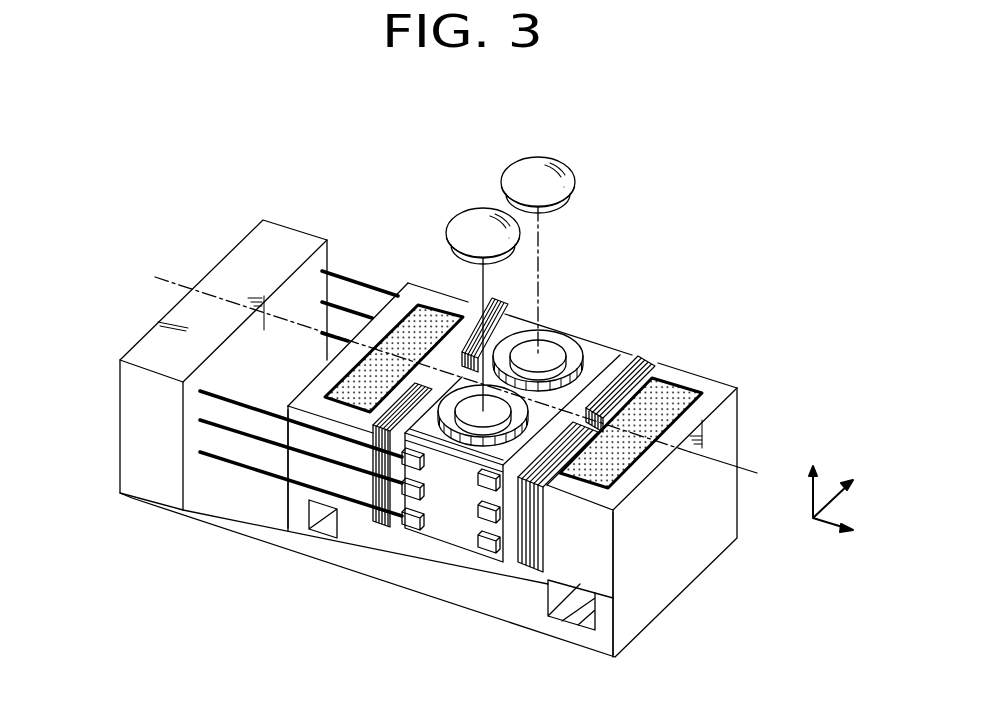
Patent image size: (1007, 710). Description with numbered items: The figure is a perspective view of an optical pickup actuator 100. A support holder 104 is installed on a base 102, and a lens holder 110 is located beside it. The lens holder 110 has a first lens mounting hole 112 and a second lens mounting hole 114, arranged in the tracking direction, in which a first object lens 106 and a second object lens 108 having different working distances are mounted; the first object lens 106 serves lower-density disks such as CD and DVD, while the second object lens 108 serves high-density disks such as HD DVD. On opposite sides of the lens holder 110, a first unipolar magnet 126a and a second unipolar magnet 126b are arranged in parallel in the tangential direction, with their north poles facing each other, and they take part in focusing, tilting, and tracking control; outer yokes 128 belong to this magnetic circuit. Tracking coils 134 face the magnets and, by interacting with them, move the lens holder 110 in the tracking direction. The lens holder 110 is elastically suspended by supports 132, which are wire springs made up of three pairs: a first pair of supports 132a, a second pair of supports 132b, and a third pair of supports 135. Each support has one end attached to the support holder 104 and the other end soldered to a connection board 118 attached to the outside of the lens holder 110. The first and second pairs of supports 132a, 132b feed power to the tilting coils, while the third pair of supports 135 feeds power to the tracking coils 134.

The optical pickup actuator 100 is at (258, 152).
The base 102 is at (253, 533).
The support holder 104 is at (218, 280).
The first object lens 106 is at (469, 217).
The second object lens 108 is at (517, 163).
The lens holder 110 is at (613, 357).
The first lens mounting hole 112 is at (466, 410).
The second lens mounting hole 114 is at (553, 368).
The connection board 118 is at (446, 495).
The first unipolar magnet 126a is at (432, 325).
The second unipolar magnet 126b is at (678, 397).
The outer yoke 128 is at (287, 408).
The supports 132 is at (342, 155).
The first pair of supports 132a is at (372, 310).
The second pair of supports 132b is at (352, 310).
The tracking coils 134 is at (430, 372).
The third pair of supports 135 is at (332, 310).